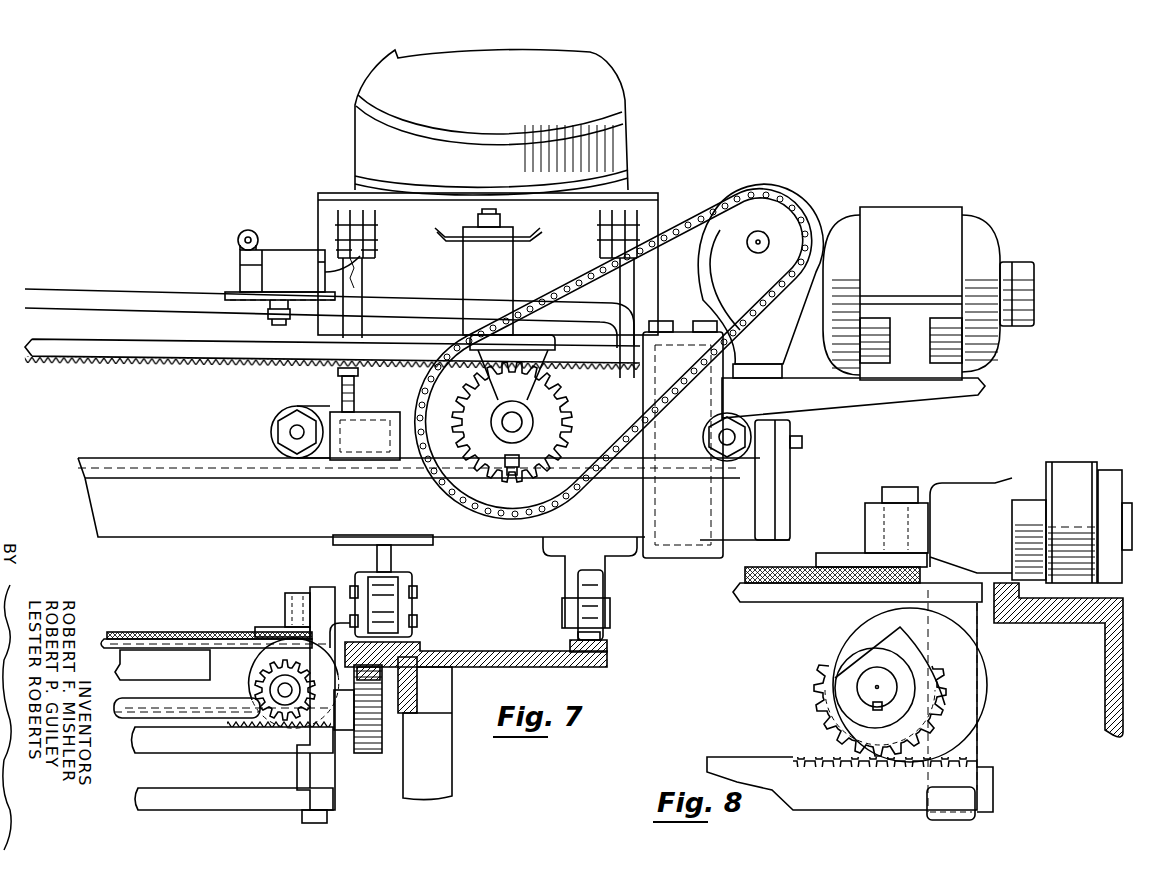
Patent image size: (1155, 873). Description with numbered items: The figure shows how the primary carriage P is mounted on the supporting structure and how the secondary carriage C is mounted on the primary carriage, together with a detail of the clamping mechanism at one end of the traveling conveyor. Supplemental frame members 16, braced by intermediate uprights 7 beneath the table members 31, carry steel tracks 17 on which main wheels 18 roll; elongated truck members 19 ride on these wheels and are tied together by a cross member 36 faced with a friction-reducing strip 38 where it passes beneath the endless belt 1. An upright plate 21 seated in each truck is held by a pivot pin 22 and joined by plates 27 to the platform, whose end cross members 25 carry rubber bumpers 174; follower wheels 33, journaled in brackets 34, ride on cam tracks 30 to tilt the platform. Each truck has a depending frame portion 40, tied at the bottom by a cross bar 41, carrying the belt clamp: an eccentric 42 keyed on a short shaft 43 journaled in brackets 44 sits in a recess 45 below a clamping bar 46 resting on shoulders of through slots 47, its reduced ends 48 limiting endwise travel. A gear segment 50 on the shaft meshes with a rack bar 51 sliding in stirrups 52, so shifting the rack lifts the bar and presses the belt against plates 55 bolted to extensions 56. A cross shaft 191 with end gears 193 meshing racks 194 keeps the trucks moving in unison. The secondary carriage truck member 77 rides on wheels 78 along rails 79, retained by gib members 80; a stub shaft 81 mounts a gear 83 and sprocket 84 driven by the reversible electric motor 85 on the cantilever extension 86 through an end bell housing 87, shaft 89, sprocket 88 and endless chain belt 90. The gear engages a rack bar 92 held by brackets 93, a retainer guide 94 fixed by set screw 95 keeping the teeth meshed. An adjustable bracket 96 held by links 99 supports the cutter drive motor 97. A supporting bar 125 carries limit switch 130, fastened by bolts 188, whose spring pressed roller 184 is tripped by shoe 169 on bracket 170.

In FIG. 7, the endless belt 1 is at (150, 632).
In FIG. 8, the endless belt 1 is at (734, 578).
In FIG. 7, the intermediate uprights 7 is at (452, 768).
In FIG. 7, the supplemental frame members 16 is at (428, 652).
In FIG. 8, the supplemental frame members 16 is at (1107, 717).
In FIG. 7, the steel tracks 17 is at (402, 630).
In FIG. 8, the steel tracks 17 is at (1102, 619).
In FIG. 8, the main wheels 18 is at (1057, 470).
In FIG. 8, the truck members 19 is at (1107, 480).
In FIG. 7, the upright plate 21 is at (392, 555).
In FIG. 7, the pivot pin 22 is at (414, 588).
In FIG. 7, the end cross members 25 is at (788, 509).
In FIG. 7, the plates 27 is at (340, 546).
In FIG. 7, the cam tracks 30 is at (607, 645).
In FIG. 7, the table members 31 is at (558, 670).
In FIG. 7, the follower wheels 33 is at (598, 580).
In FIG. 7, the brackets 34 is at (565, 567).
In FIG. 7, the cross member 36 is at (177, 640).
In FIG. 7, the strips 38 is at (128, 636).
In FIG. 7, the frame portion 40 is at (337, 764).
In FIG. 8, the frame portion 40 is at (980, 740).
In FIG. 7, the cross bar 41 is at (219, 797).
In FIG. 7, the eccentric 42 is at (277, 663).
In FIG. 8, the eccentric 42 is at (971, 683).
In FIG. 8, the short shaft 43 is at (860, 683).
In FIG. 8, the brackets 44 is at (880, 645).
In FIG. 8, the recesses 45 is at (970, 625).
In FIG. 8, the clamping bar 46 is at (750, 603).
In FIG. 8, the through slots 47 is at (938, 587).
In FIG. 8, the reduced ends 48 is at (965, 590).
In FIG. 7, the gear segment 50 is at (262, 699).
In FIG. 8, the gear segment 50 is at (828, 718).
In FIG. 7, the rack bar 51 is at (172, 744).
In FIG. 8, the rack bar 51 is at (753, 757).
In FIG. 8, the stirrups 52 is at (930, 800).
In FIG. 7, the plates 55 is at (266, 626).
In FIG. 8, the plates 55 is at (839, 557).
In FIG. 7, the extensions 56 is at (280, 608).
In FIG. 8, the extensions 56 is at (877, 517).
In FIG. 7, the truck member 77 is at (376, 412).
In FIG. 7, the wheels 78 is at (274, 416).
In FIG. 7, the rails 79 is at (196, 458).
In FIG. 7, the gib members 80 is at (392, 494).
In FIG. 7, the stub shaft 81 is at (515, 411).
In FIG. 7, the gear 83 is at (478, 443).
In FIG. 7, the sprocket 84 is at (540, 492).
In FIG. 7, the reversible electric motor 85 is at (918, 213).
In FIG. 7, the cantilever extension 86 is at (982, 381).
In FIG. 7, the end bell housing 87 is at (816, 205).
In FIG. 7, the sprocket 88 is at (774, 215).
In FIG. 7, the shaft 89 is at (756, 248).
In FIG. 7, the endless chain belt 90 is at (688, 213).
In FIG. 7, the rack bar 92 is at (148, 348).
In FIG. 7, the brackets 93 is at (650, 516).
In FIG. 7, the retainer guide 94 is at (546, 344).
In FIG. 7, the set screw 95 is at (508, 468).
In FIG. 7, the adjustable bracket 96 is at (326, 193).
In FIG. 7, the cutter drive motor 97 is at (360, 94).
In FIG. 7, the adjustable length links 99 is at (362, 289).
In FIG. 7, the supporting bar 125 is at (121, 290).
In FIG. 7, the limit switch 130 is at (284, 250).
In FIG. 7, the shoe 169 is at (528, 234).
In FIG. 7, the bracket 170 is at (500, 274).
In FIG. 7, the rubber bumpers 174 is at (768, 447).
In FIG. 7, the spring pressed roller 184 is at (240, 235).
In FIG. 7, the bolts 188 is at (274, 321).
In FIG. 7, the cross shaft 191 is at (148, 705).
In FIG. 7, the gears 193 is at (358, 753).
In FIG. 7, the racks 194 is at (440, 689).
In FIG. 7, the secondary carriage C is at (681, 171).
In FIG. 7, the primary carriage P is at (155, 447).